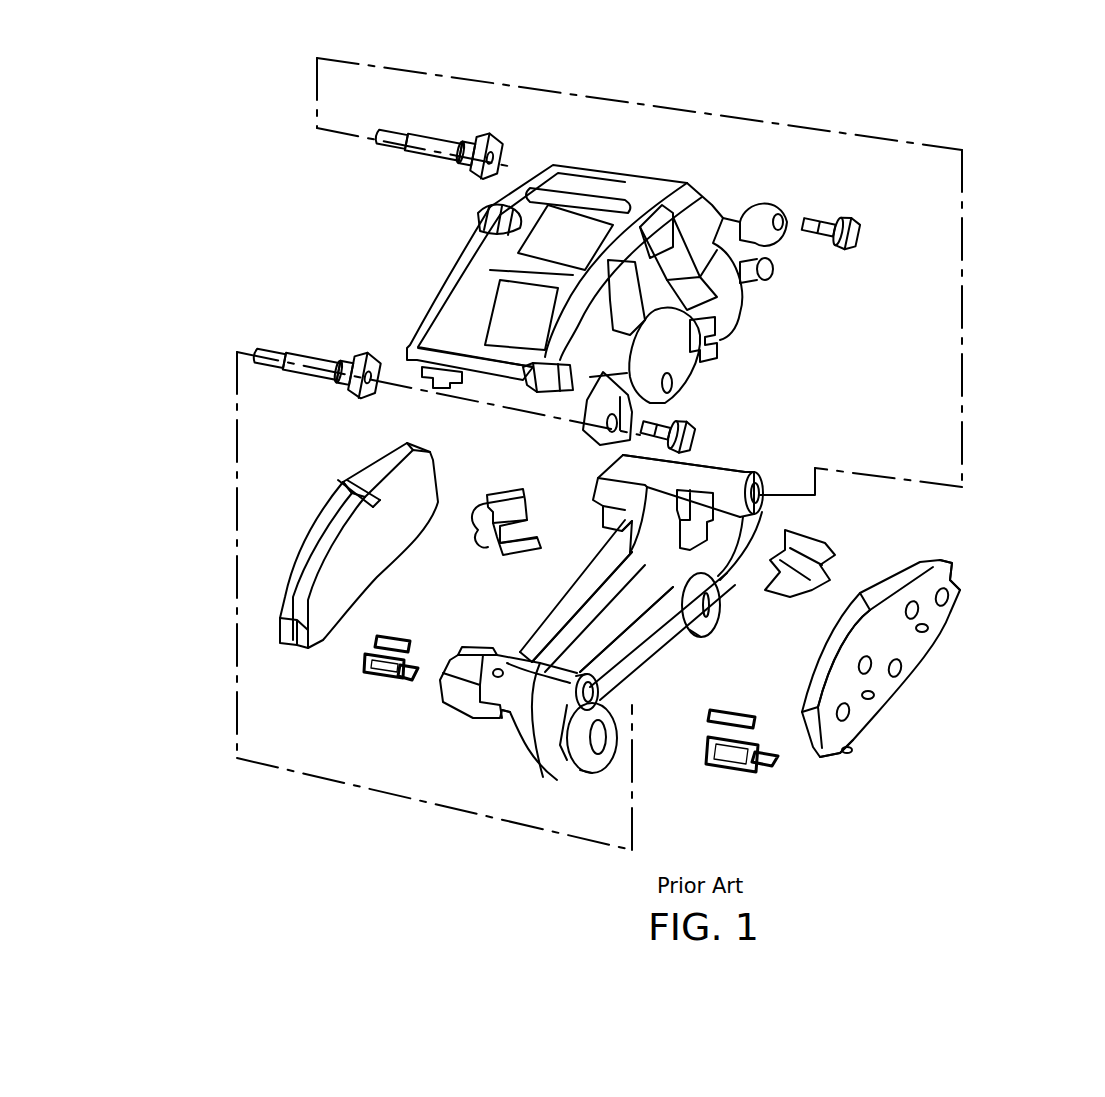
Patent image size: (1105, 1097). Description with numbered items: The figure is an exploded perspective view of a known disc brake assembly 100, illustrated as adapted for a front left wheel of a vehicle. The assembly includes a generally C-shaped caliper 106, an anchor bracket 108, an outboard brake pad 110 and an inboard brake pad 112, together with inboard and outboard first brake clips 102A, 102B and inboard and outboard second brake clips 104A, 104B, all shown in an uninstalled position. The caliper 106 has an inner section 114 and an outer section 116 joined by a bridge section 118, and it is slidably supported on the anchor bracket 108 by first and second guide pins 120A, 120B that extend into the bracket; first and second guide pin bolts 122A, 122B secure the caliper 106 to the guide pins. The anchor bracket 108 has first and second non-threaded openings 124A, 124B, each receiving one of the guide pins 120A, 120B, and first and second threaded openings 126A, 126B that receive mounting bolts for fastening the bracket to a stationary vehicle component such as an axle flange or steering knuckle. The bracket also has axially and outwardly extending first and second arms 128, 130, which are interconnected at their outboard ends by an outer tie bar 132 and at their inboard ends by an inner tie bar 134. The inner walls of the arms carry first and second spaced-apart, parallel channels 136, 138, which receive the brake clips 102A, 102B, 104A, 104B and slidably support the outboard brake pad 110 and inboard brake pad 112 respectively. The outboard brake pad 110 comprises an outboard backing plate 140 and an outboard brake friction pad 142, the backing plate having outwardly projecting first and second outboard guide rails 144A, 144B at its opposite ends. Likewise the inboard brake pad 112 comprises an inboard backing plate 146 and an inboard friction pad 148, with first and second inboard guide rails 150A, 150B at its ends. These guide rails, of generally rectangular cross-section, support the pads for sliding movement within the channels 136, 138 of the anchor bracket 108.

The disc brake assembly 100 is at (980, 98).
The inboard first brake clip 102A is at (850, 543).
The outboard first brake clip 102B is at (535, 518).
The inboard second brake clip 104A is at (772, 775).
The outboard second brake clip 104B is at (378, 702).
The caliper 106 is at (633, 183).
The anchor bracket 108 is at (668, 609).
The outboard brake pad 110 is at (335, 532).
The inboard brake pad 112 is at (906, 679).
The inner section 114 is at (554, 390).
The outer section 116 is at (453, 398).
The bridge section 118 is at (497, 362).
The first guide pin 120A is at (440, 135).
The second guide pin 120B is at (318, 355).
The first guide pin bolt 122A is at (862, 236).
The second guide pin bolt 122B is at (700, 445).
The first non-threaded opening 124A is at (765, 510).
The second non-threaded opening 124B is at (612, 697).
The first threaded opening 126A is at (708, 610).
The second threaded opening 126B is at (605, 748).
The first arm 128 is at (760, 470).
The second arm 130 is at (483, 697).
The outer tie bar 132 is at (567, 600).
The inner tie bar 134 is at (633, 657).
The first channels 136 is at (679, 520).
The second channels 138 is at (472, 646).
The outboard backing plate 140 is at (320, 528).
The outboard brake friction pad 142 is at (358, 578).
The first outboard guide rail 144A is at (440, 478).
The second outboard guide rail 144B is at (283, 635).
The inboard backing plate 146 is at (933, 635).
The inboard friction pad 148 is at (837, 650).
The first inboard guide rail 150A is at (960, 590).
The second inboard guide rail 150B is at (818, 762).